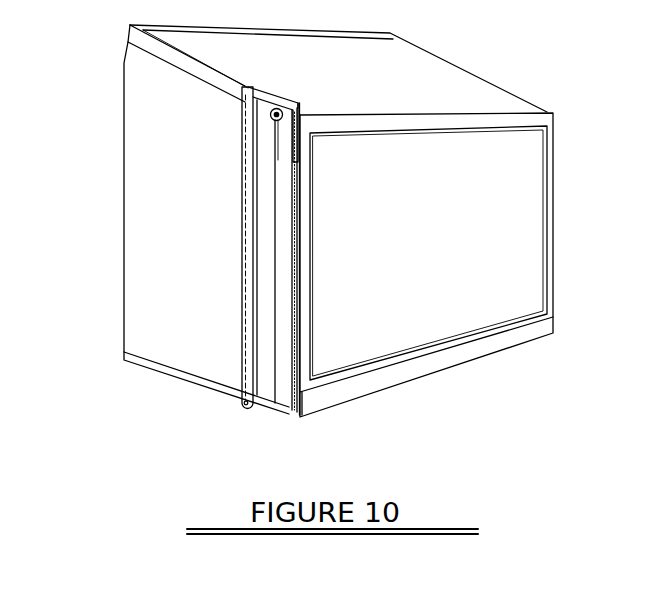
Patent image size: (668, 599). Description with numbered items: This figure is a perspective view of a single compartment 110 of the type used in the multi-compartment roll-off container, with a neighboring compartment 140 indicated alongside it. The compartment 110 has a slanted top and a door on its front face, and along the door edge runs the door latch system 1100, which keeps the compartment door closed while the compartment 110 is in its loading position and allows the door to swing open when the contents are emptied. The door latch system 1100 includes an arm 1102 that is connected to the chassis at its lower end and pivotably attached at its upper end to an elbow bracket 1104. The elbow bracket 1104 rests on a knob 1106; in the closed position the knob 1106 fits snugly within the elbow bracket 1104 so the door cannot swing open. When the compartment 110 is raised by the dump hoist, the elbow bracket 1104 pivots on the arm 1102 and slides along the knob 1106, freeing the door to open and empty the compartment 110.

The compartment 110 is at (568, 167).
The compartment 140 is at (125, 378).
The door latch system 1100 is at (283, 340).
The arm 1102 is at (245, 135).
The elbow bracket 1104 is at (232, 78).
The knob 1106 is at (273, 118).